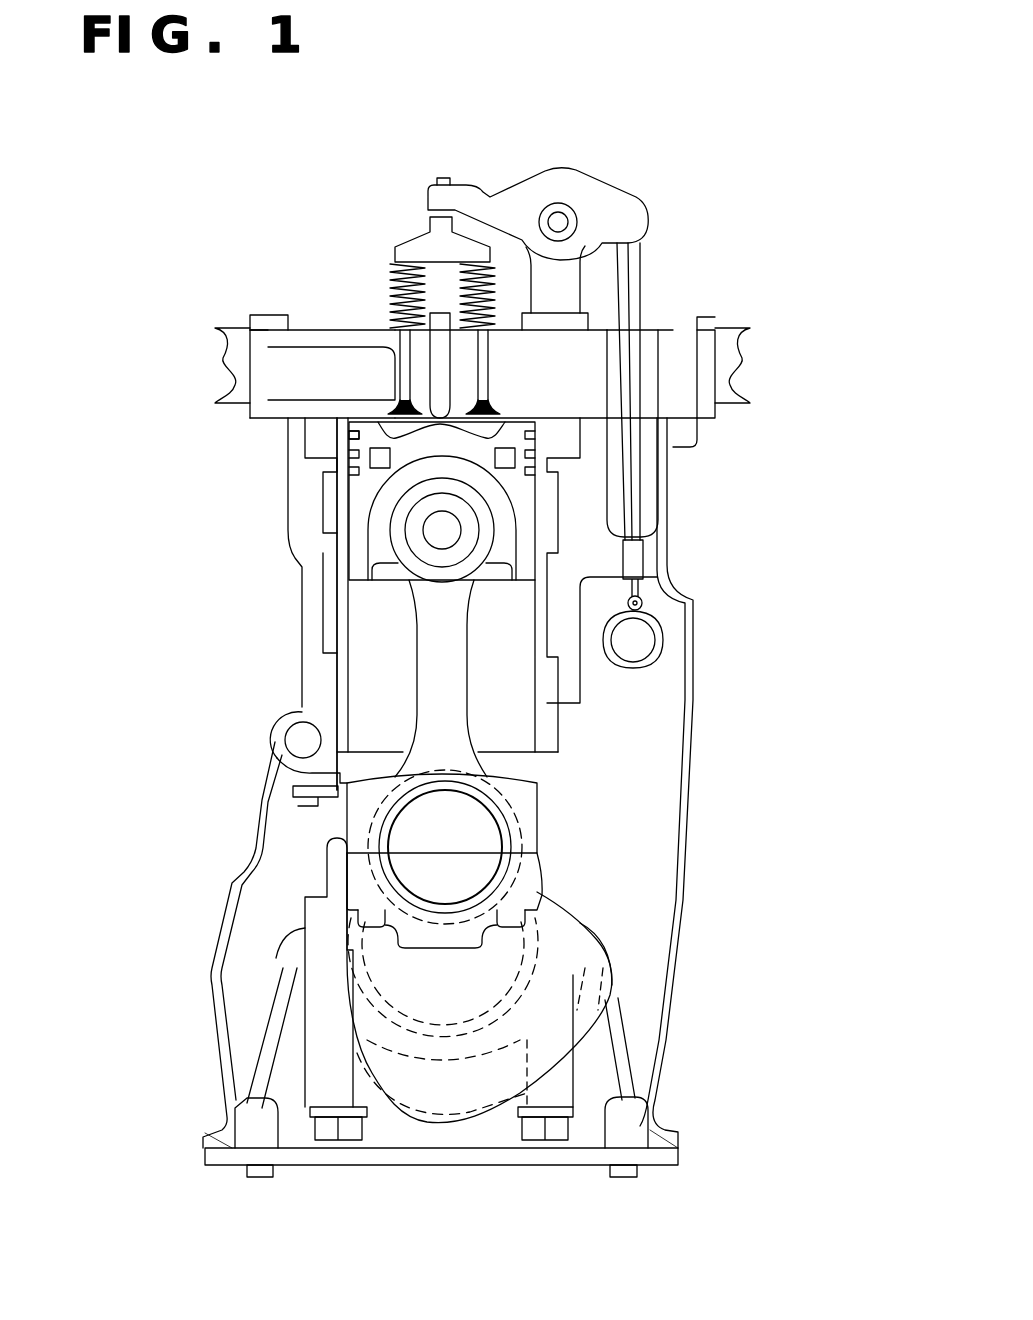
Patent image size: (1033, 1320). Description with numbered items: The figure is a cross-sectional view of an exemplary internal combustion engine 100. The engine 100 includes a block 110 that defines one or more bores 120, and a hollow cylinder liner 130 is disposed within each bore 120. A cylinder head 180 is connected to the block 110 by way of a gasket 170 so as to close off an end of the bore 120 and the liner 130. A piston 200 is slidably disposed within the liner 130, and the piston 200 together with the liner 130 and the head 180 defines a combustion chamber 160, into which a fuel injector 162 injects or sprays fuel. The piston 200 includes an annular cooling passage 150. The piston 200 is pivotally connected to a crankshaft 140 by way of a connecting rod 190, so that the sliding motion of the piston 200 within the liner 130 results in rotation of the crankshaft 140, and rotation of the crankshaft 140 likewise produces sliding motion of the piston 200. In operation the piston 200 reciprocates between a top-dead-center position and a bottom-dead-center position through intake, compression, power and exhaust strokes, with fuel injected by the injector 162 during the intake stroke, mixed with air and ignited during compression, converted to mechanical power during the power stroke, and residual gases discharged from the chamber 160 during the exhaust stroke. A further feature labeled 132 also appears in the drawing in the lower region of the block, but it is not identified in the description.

The internal combustion engine 100 is at (672, 140).
The engine block 110 is at (612, 563).
The cylinder bore 120 is at (548, 712).
The cylinder liner 130 is at (583, 785).
The crankcase wall 132 is at (508, 723).
The crankshaft 140 is at (463, 846).
The annular cooling passage 150 is at (370, 468).
The combustion chamber 160 is at (395, 425).
The fuel injector 162 is at (442, 323).
The gasket 170 is at (328, 418).
The cylinder head 180 is at (582, 379).
The connecting rod 190 is at (460, 667).
The piston 200 is at (462, 453).